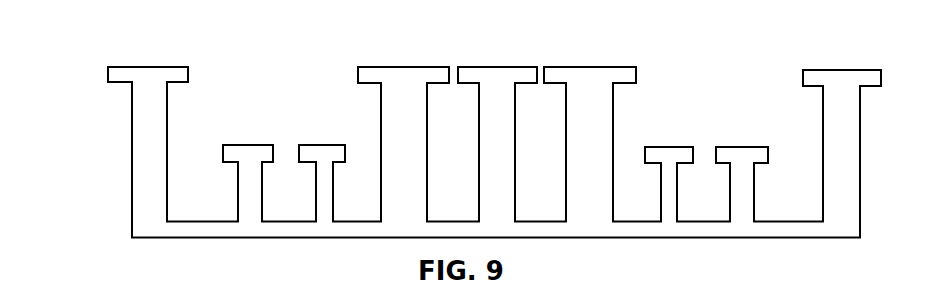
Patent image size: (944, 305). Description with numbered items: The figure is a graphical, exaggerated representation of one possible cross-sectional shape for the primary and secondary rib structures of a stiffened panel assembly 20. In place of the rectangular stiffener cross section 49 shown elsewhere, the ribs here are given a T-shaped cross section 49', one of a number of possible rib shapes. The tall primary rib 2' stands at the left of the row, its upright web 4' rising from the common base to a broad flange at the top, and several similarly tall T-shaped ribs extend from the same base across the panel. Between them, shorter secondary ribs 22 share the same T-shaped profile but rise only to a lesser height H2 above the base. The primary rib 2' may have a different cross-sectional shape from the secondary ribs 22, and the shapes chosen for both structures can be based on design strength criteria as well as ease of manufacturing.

The vane/profile assembly 20 is at (758, 40).
The primary rib 2' is at (148, 46).
The stem of T-shaped element 4' is at (194, 152).
The T-shaped cross section 49' is at (99, 160).
The secondary rib 22 is at (247, 145).
The stiffener cross section 49 is at (205, 190).
The height H2 is at (262, 175).